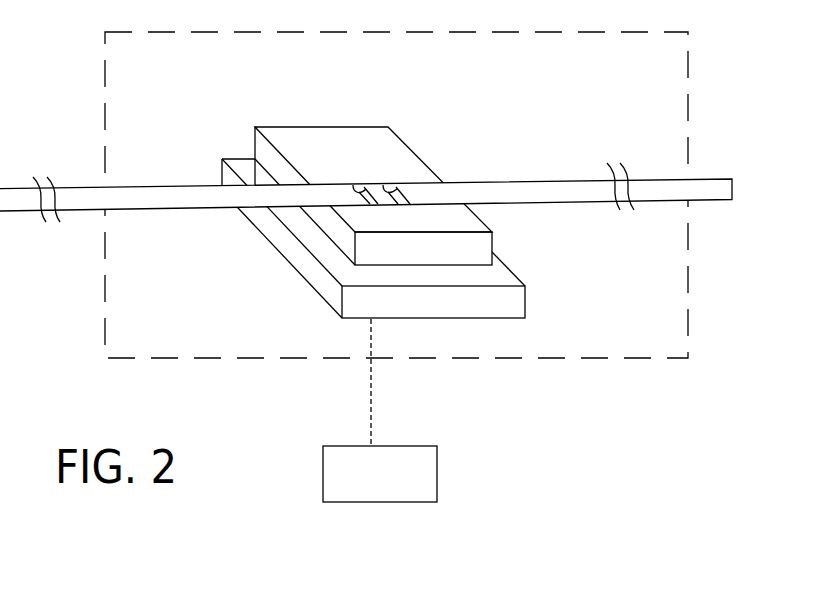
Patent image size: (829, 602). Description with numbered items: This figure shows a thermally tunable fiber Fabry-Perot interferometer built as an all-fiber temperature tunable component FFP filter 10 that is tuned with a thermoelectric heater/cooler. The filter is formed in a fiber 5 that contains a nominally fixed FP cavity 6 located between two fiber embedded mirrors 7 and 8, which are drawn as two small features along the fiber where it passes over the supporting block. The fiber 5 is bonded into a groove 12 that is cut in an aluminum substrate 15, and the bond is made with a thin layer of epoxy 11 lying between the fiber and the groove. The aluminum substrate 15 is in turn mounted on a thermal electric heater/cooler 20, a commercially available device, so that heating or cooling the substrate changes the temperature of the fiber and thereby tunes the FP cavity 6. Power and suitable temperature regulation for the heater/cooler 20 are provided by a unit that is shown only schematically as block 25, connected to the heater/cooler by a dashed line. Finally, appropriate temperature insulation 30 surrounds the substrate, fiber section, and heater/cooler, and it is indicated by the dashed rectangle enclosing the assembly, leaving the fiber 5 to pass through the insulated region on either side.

The fiber 5 is at (535, 188).
The nominally fixed FP cavity 6 is at (402, 204).
The fiber embedded mirror 7 is at (353, 185).
The fiber embedded mirror 8 is at (383, 185).
The temperature tunable component FFP filter 10 is at (426, 101).
The thin layer of epoxy 11 is at (320, 206).
The groove 12 is at (324, 207).
The aluminum substrate 15 is at (287, 138).
The thermal electric heater/cooler 20 is at (518, 303).
The power and temperature regulation 25 is at (430, 481).
The temperature insulation 30 is at (667, 58).